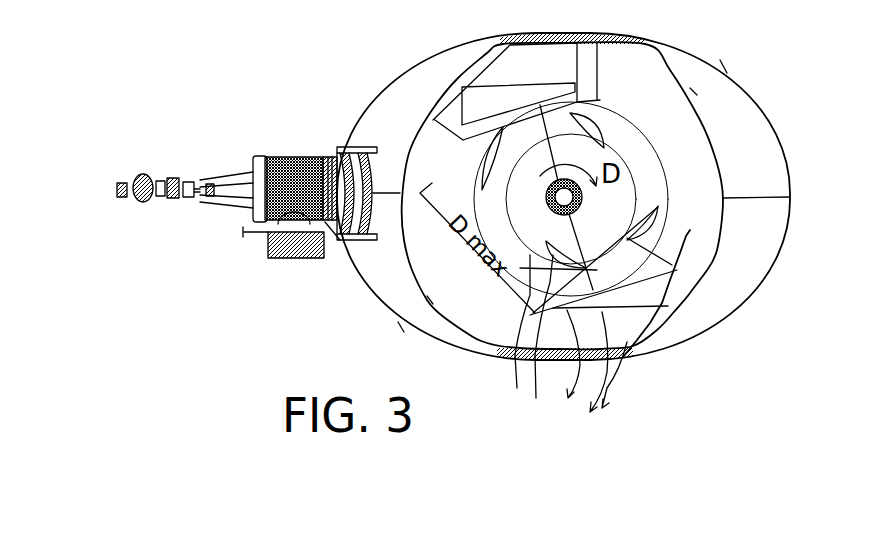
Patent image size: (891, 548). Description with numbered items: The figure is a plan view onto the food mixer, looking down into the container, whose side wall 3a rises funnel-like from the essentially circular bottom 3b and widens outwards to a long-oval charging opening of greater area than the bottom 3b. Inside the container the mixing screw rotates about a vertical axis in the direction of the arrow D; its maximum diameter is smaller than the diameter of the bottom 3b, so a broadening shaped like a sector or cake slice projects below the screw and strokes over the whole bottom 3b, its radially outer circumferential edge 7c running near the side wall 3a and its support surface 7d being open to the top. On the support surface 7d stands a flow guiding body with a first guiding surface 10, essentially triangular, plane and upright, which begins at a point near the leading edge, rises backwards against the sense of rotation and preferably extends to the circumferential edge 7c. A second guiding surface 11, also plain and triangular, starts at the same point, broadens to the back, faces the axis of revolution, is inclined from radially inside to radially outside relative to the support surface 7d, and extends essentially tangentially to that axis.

The side wall 3a is at (722, 100).
The bottom 3b is at (562, 196).
The circumferential edge 7c is at (682, 310).
The support surface 7d is at (677, 273).
The first guiding surface 10 is at (657, 327).
The second guiding surface 11 is at (690, 230).